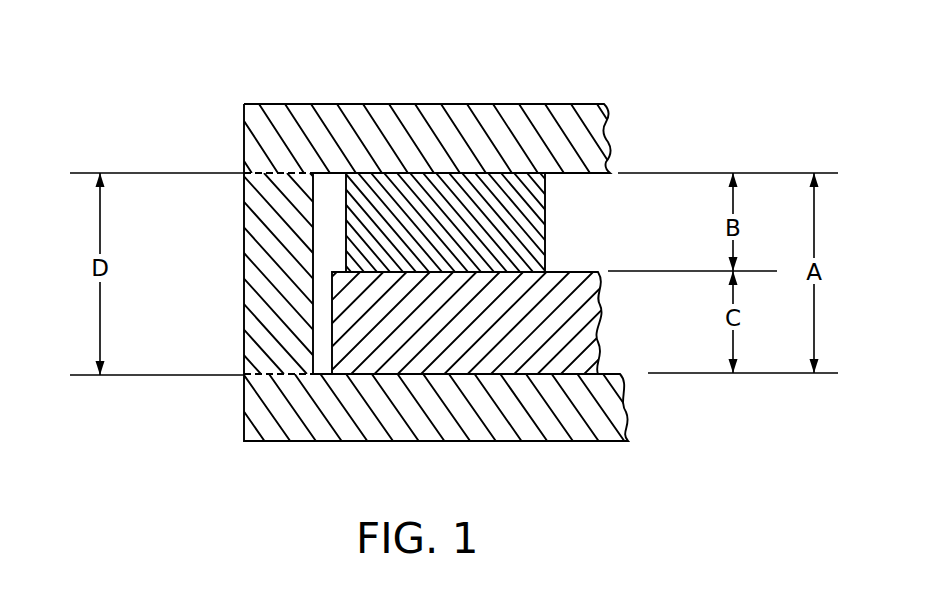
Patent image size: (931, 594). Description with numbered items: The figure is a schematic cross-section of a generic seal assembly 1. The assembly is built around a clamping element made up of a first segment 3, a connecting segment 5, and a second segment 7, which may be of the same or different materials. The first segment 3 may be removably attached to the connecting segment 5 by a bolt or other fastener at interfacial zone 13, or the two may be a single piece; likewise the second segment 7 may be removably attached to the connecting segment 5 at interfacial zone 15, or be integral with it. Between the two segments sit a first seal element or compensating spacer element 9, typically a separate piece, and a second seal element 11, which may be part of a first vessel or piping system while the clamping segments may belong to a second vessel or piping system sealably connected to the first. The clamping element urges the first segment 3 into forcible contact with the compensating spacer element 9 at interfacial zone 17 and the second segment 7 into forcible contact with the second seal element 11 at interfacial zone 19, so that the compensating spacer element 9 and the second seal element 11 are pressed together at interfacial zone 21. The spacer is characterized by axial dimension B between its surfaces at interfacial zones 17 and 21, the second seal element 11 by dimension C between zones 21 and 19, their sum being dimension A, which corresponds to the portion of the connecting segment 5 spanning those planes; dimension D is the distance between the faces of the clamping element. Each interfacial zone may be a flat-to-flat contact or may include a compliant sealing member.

The seal assembly 1 is at (686, 108).
The first segment 3 is at (353, 104).
The connecting segment 5 is at (243, 316).
The second segment 7 is at (310, 442).
The compensating spacer element 9 is at (545, 227).
The second seal element 11 is at (600, 336).
The interfacial zone 13 is at (285, 173).
The interfacial zone 15 is at (291, 374).
The interfacial zone 17 is at (464, 173).
The interfacial zone 19 is at (457, 374).
The interfacial zone 21 is at (411, 272).